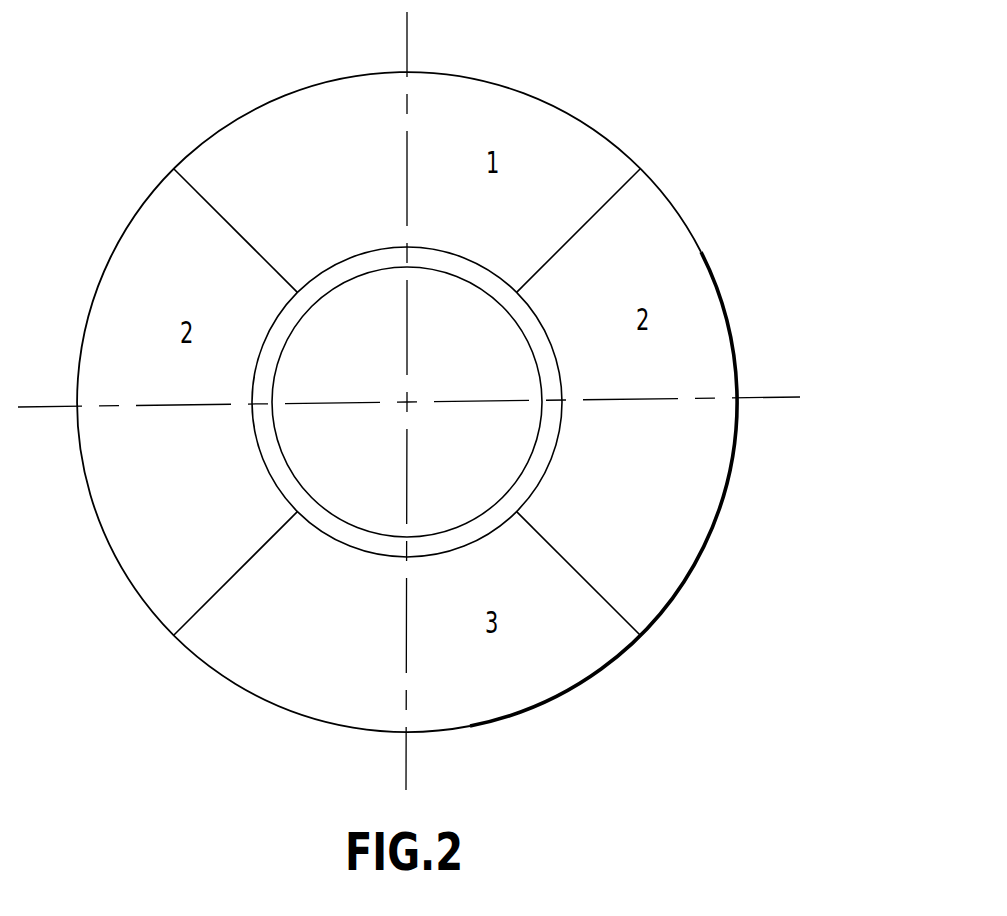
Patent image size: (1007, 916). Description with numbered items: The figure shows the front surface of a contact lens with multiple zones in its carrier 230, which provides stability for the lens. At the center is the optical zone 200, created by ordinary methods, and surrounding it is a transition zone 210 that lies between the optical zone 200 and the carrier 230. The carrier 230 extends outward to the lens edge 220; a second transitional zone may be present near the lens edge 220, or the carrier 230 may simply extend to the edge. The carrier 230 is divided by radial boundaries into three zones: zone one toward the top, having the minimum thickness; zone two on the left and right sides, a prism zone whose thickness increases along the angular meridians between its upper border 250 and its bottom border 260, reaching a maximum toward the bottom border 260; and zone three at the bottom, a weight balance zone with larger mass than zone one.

The optical zone 200 is at (407, 402).
The transition zone 210 is at (287, 472).
The lens edge 220 is at (562, 687).
The carrier 230 is at (583, 165).
The border 250 is at (580, 223).
The bottom border 260 is at (605, 595).